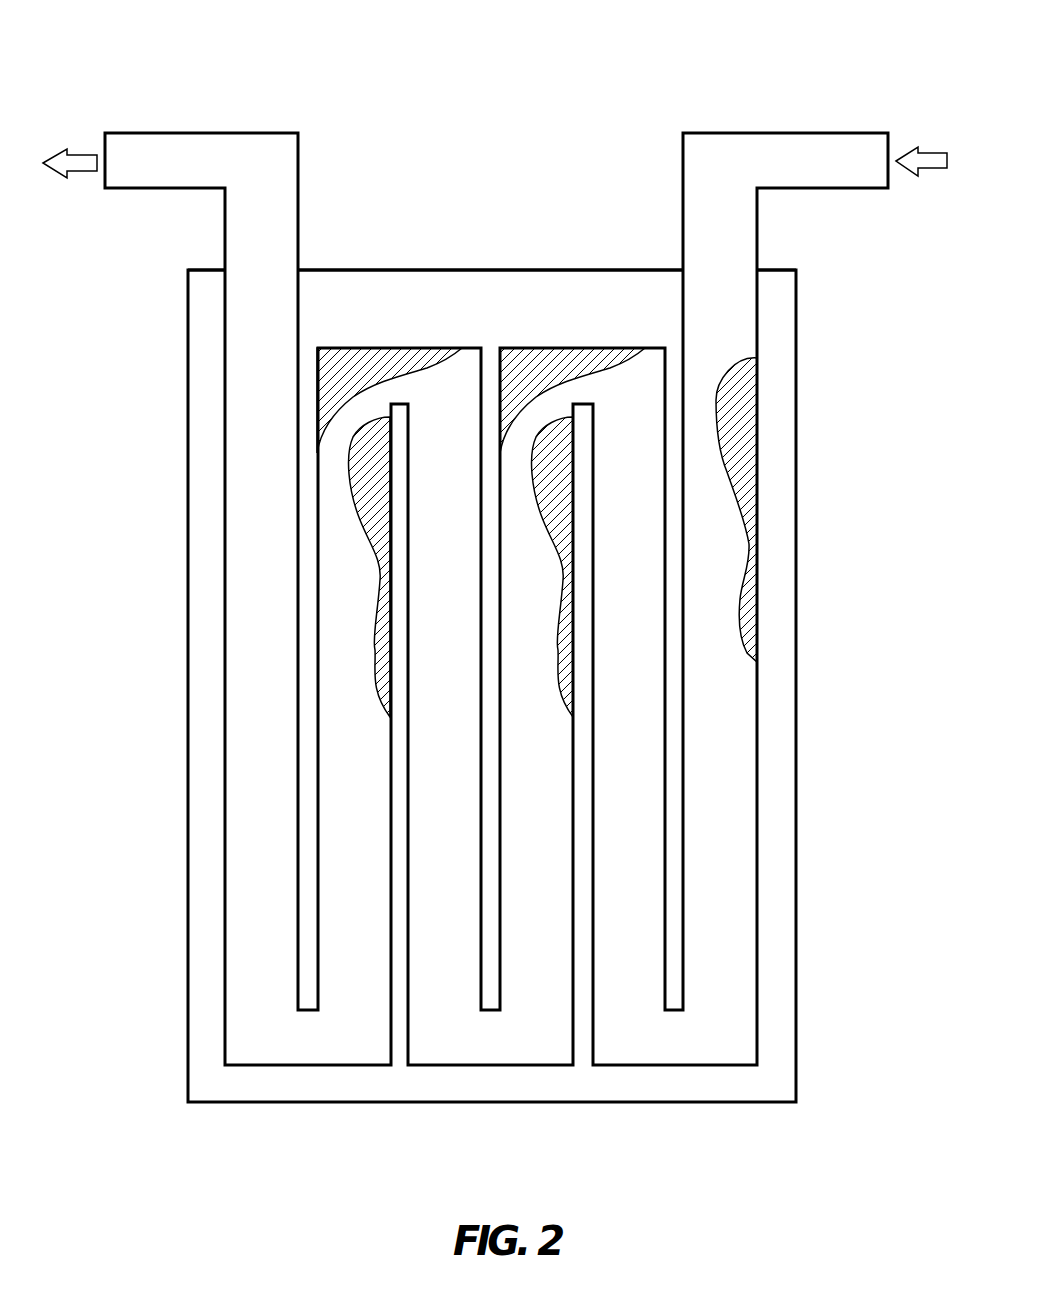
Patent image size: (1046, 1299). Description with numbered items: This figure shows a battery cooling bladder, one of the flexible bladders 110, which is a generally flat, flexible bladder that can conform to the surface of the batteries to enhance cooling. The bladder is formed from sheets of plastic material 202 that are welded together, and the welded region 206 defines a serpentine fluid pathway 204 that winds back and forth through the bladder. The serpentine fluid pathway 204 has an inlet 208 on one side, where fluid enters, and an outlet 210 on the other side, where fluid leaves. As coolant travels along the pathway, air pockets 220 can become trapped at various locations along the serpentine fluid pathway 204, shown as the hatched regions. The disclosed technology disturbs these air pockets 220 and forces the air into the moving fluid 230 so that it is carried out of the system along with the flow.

The flexible bladder 110 is at (331, 62).
The sheets of plastic material 202 is at (477, 268).
The serpentine fluid pathway 204 is at (712, 842).
The welded region 206 is at (423, 330).
The inlet 208 is at (892, 179).
The outlet 210 is at (104, 148).
The air pockets 220 is at (335, 348).
The moving fluid 230 is at (736, 734).